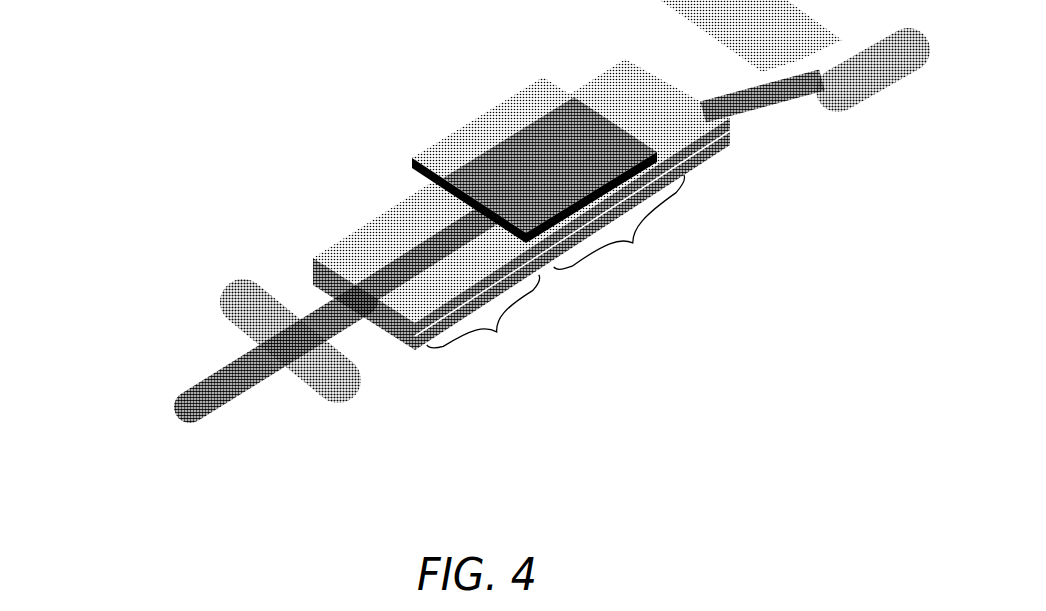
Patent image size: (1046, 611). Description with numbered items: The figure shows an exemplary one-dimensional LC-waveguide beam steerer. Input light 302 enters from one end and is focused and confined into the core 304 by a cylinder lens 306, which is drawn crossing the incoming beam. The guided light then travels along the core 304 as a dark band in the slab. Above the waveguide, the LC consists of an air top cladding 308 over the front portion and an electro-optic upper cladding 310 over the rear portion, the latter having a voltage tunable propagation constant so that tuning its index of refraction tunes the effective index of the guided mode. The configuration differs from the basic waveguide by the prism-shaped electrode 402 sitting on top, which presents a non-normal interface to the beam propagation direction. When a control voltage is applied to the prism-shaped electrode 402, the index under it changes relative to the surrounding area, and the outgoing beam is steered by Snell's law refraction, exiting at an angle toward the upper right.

The input light 302 is at (212, 371).
The core 304 is at (407, 242).
The cylinder lens 306 is at (345, 378).
The air top cladding 308 is at (519, 348).
The electro-optic upper cladding 310 is at (711, 266).
The prism-shaped electrode 402 is at (483, 114).